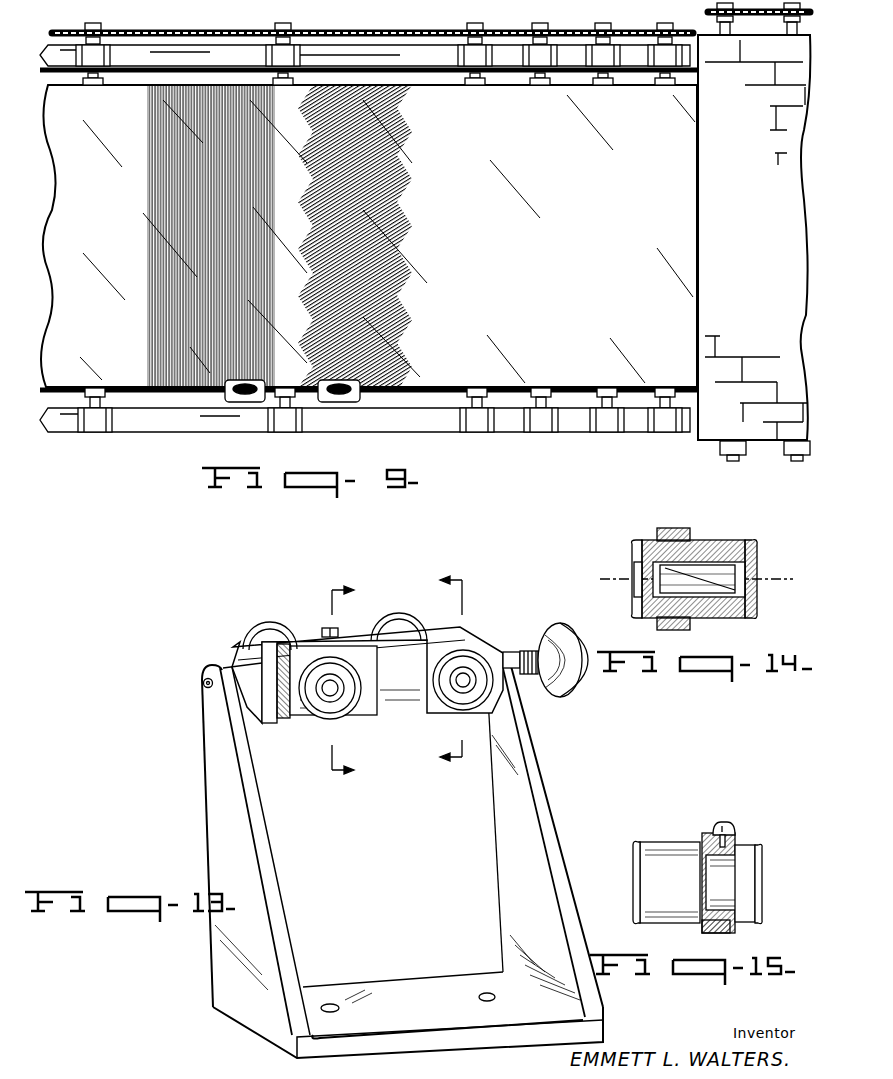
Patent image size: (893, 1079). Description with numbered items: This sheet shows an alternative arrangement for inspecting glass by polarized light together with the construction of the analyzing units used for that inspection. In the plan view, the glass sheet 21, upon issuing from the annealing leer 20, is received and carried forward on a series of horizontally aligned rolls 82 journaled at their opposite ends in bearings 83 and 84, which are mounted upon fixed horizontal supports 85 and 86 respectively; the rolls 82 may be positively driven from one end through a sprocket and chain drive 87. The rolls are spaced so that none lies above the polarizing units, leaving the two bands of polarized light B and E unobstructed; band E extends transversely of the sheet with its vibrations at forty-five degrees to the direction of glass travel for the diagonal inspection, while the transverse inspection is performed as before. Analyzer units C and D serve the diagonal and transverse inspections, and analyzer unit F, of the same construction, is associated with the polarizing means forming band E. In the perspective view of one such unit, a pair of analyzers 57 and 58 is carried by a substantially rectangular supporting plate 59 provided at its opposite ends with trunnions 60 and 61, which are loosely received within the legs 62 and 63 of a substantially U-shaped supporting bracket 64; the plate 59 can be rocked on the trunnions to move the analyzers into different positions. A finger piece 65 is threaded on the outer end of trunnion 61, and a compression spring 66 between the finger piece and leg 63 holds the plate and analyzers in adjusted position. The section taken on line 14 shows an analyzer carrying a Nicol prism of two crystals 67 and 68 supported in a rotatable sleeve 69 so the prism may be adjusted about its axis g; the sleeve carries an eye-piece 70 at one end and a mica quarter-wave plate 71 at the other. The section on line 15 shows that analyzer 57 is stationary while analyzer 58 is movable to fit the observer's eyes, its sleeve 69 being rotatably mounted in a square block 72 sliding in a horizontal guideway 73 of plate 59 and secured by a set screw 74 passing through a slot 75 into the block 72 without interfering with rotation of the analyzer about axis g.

In FIG. 9, the annealing leer 20 is at (705, 48).
In FIG. 9, the glass sheet 21 is at (584, 360).
In FIG. 9, the rolls 82 is at (597, 85).
In FIG. 9, the bearings 83 is at (505, 56).
In FIG. 9, the bearings 84 is at (528, 424).
In FIG. 9, the fixed horizontal support 85 is at (432, 55).
In FIG. 9, the fixed horizontal support 86 is at (418, 426).
In FIG. 9, the sprocket and chain drive 87 is at (406, 20).
In FIG. 9, the band of polarized light B is at (146, 186).
In FIG. 9, the band of polarized light E is at (402, 205).
In FIG. 9, the analyzer unit D is at (237, 398).
In FIG. 9, the analyzer unit F is at (340, 403).
In FIG. 13, the analyzer unit C is at (560, 778).
In FIG. 14, the axis g is at (692, 578).
In FIG. 13, the analyzer 57 is at (432, 612).
In FIG. 13, the analyzer 58 is at (290, 625).
In FIG. 13, the supporting plate 59 is at (395, 712).
In FIG. 14, the supporting plate 59 is at (675, 530).
In FIG. 15, the supporting plate 59 is at (735, 838).
In FIG. 13, the trunnion 60 is at (203, 684).
In FIG. 13, the trunnion 61 is at (512, 650).
In FIG. 13, the leg 62 is at (270, 860).
In FIG. 13, the leg 63 is at (556, 820).
In FIG. 13, the supporting bracket 64 is at (432, 978).
In FIG. 13, the finger piece 65 is at (565, 638).
In FIG. 13, the compression spring 66 is at (530, 650).
In FIG. 14, the crystal 67 is at (710, 562).
In FIG. 14, the crystal 68 is at (700, 622).
In FIG. 14, the rotatable sleeve 69 is at (730, 548).
In FIG. 15, the rotatable sleeve 69 is at (668, 860).
In FIG. 13, the eye-piece 70 is at (470, 668).
In FIG. 14, the eye-piece 70 is at (634, 618).
In FIG. 15, the eye-piece 70 is at (762, 878).
In FIG. 14, the mica quarter-wave plate 71 is at (757, 564).
In FIG. 13, the block 72 is at (290, 722).
In FIG. 15, the block 72 is at (702, 928).
In FIG. 13, the guideway 73 is at (268, 724).
In FIG. 13, the set screw 74 is at (338, 628).
In FIG. 15, the set screw 74 is at (724, 822).
In FIG. 13, the slot 75 is at (312, 643).
In FIG. 13, the section line 14— 14 is at (452, 670).
In FIG. 13, the section line 15— 15 is at (332, 679).